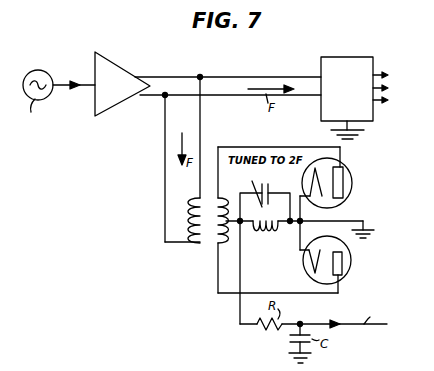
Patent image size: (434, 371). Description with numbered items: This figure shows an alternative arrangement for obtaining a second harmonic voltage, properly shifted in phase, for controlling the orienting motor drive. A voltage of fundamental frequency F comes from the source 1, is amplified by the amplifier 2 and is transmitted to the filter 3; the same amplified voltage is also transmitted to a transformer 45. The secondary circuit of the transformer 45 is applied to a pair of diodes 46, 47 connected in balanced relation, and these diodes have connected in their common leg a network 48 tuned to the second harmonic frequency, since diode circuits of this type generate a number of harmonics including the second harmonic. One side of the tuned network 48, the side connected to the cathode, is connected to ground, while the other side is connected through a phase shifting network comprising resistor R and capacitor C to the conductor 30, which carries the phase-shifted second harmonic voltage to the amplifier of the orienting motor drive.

The source 1 is at (50, 73).
The amplifier 2 is at (125, 68).
The filter 3 is at (349, 58).
The transformer 45 is at (212, 242).
The diode 46 is at (352, 181).
The diode 47 is at (351, 258).
The network tuned to the second harmonic frequency 48 is at (256, 228).
The conductor 30 is at (347, 327).